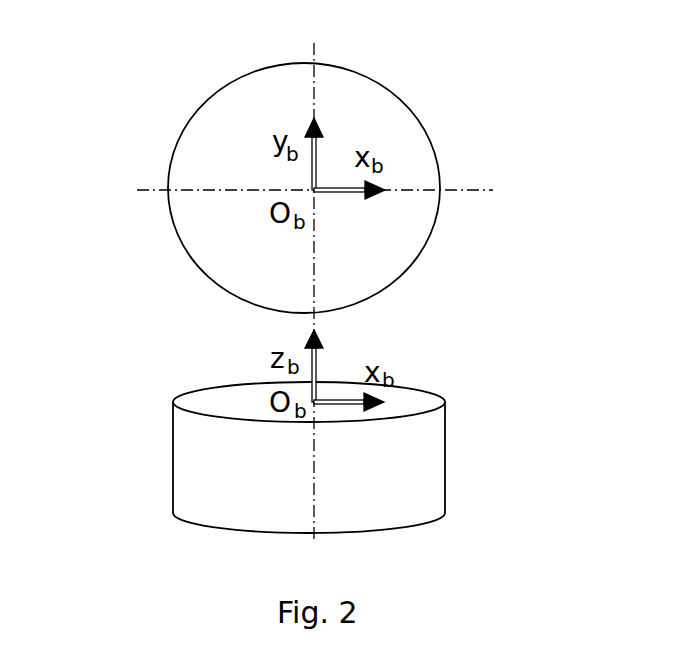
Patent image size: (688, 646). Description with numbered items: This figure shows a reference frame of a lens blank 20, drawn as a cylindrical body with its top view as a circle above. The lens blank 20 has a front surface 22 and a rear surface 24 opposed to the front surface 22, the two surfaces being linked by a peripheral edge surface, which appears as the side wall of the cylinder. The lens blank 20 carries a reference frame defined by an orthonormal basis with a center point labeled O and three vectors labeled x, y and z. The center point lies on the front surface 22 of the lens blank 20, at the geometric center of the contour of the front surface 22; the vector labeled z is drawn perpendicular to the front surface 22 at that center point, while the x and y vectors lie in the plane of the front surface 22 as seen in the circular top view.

The lens blank 20 is at (310, 455).
The front surface 22 is at (205, 398).
The rear surface 24 is at (245, 533).